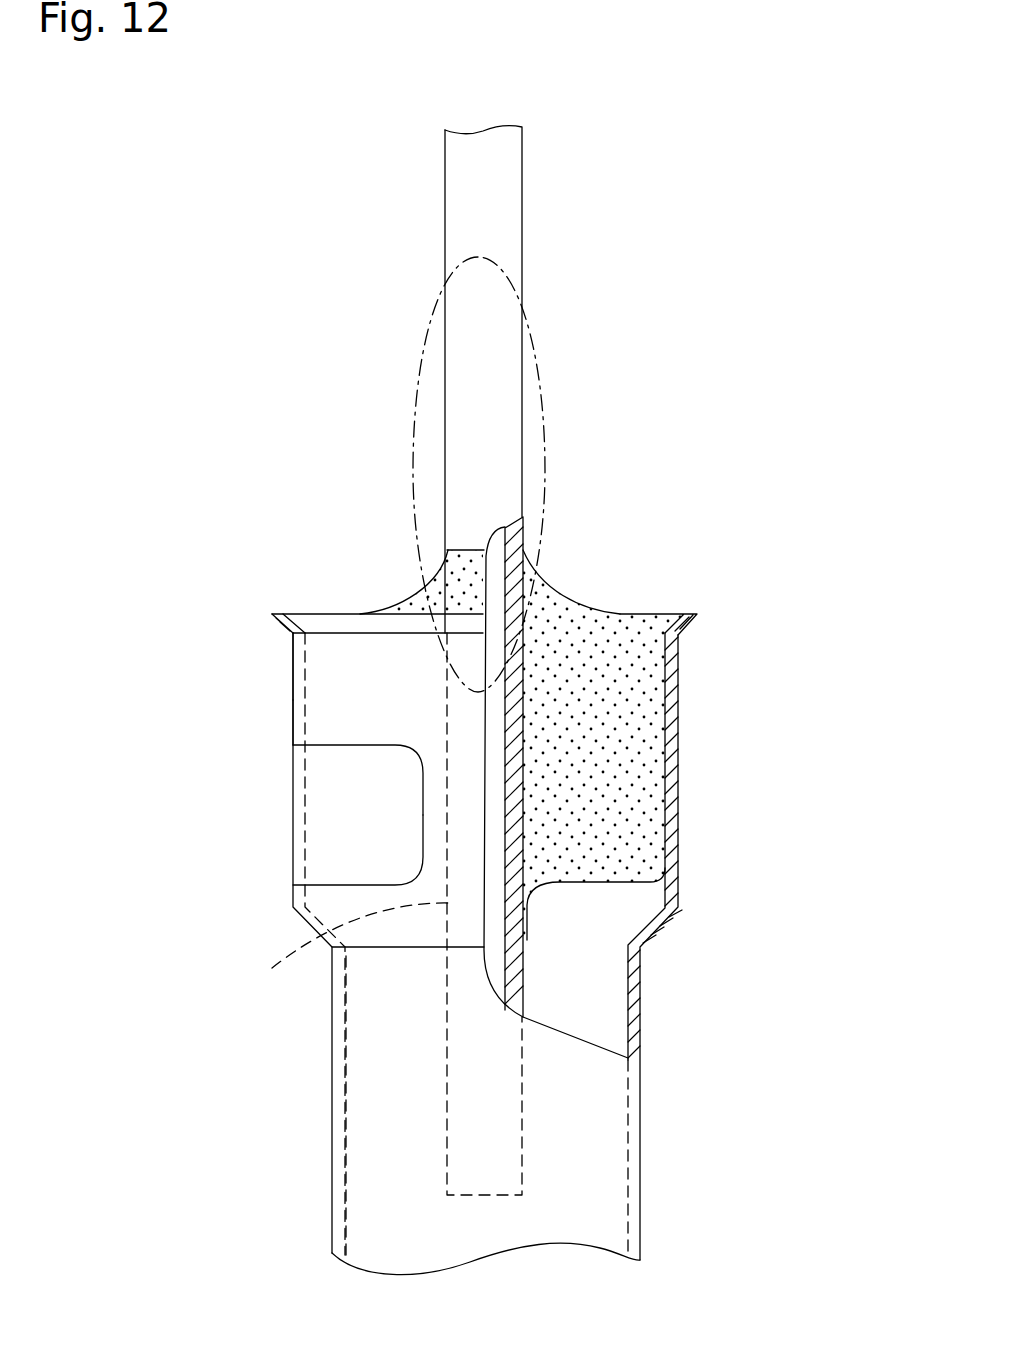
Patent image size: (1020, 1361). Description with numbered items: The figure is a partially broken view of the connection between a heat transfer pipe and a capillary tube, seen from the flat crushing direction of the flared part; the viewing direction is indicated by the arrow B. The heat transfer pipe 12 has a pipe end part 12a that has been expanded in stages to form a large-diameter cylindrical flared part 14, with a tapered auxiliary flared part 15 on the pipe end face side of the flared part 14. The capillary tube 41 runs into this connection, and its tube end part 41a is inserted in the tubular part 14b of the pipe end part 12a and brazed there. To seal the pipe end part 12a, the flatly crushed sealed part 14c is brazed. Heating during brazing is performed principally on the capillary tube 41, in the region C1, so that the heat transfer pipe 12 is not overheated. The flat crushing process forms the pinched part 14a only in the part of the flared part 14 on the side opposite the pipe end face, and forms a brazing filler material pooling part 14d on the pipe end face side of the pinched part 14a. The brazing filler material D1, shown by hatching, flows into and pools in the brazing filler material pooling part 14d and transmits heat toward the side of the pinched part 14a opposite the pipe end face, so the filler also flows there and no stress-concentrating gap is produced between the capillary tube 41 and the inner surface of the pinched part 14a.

The capillary tube 41 is at (526, 189).
The tube end part 41a is at (332, 944).
The region C1 is at (531, 333).
The brazing filler material D1 is at (423, 592).
The auxiliary flared part 15 is at (290, 632).
The flared part 14 is at (180, 778).
The pinched part 14a is at (277, 667).
The tubular part 14b is at (437, 802).
The sealed part 14c is at (320, 783).
The brazing filler material pooling part 14d is at (327, 713).
The direction B is at (167, 760).
The pipe end part 12a is at (658, 1138).
The heat transfer pipe 12 is at (662, 1215).